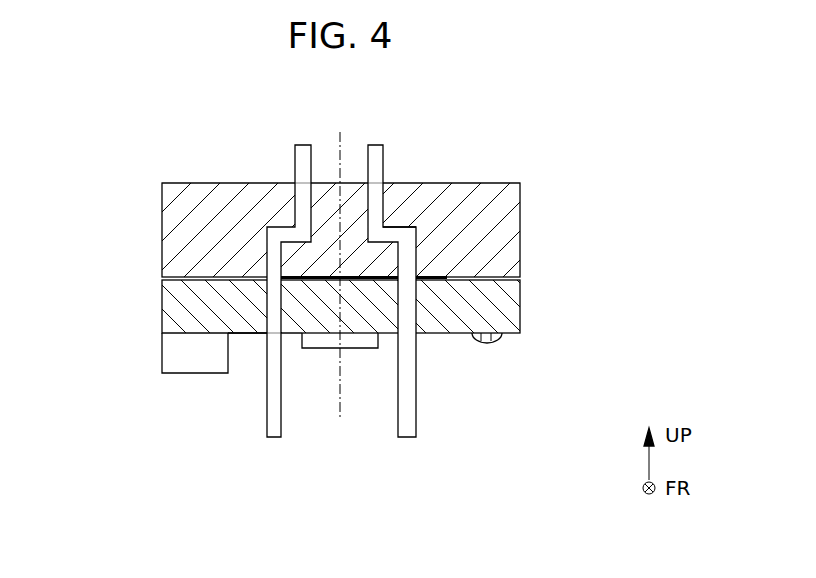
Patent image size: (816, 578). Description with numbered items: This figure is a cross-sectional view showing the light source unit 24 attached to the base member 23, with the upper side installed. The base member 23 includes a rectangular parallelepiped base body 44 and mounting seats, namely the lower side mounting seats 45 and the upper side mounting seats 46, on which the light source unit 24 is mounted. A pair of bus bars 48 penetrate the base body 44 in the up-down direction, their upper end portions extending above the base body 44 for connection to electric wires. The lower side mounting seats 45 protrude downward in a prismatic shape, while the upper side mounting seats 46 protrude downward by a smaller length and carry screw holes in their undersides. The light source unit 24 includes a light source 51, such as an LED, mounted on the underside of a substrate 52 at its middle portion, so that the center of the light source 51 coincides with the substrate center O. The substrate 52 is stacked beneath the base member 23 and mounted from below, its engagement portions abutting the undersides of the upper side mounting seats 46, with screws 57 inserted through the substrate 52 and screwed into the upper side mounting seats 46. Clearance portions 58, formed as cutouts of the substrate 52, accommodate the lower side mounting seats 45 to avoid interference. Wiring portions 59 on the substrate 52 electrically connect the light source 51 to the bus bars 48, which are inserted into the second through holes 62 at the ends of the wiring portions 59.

The base member 23 is at (499, 181).
The light source unit 24 is at (242, 336).
The base body 44 is at (180, 221).
The lower side mounting seat 45 is at (172, 352).
The upper side mounting seat 46 is at (522, 277).
The bus bar 48 is at (399, 413).
The light source 51 is at (316, 350).
The substrate 52 is at (178, 314).
The screw 57 is at (503, 343).
The clearance portion 58 is at (222, 315).
The wiring portion 59 is at (395, 337).
The second through hole 62 is at (415, 300).
The substrate center O is at (341, 160).